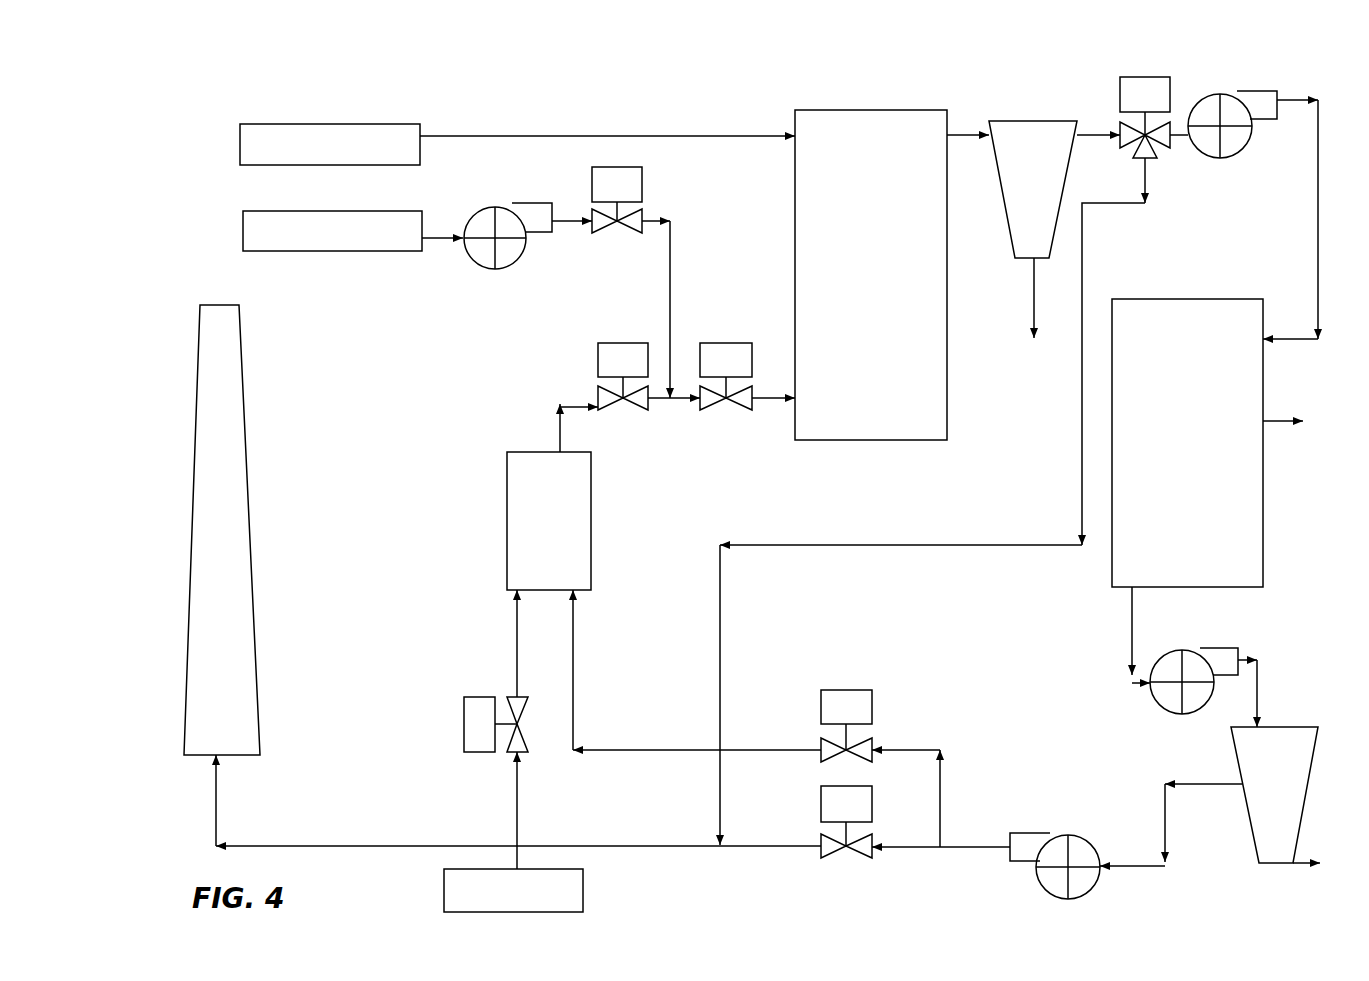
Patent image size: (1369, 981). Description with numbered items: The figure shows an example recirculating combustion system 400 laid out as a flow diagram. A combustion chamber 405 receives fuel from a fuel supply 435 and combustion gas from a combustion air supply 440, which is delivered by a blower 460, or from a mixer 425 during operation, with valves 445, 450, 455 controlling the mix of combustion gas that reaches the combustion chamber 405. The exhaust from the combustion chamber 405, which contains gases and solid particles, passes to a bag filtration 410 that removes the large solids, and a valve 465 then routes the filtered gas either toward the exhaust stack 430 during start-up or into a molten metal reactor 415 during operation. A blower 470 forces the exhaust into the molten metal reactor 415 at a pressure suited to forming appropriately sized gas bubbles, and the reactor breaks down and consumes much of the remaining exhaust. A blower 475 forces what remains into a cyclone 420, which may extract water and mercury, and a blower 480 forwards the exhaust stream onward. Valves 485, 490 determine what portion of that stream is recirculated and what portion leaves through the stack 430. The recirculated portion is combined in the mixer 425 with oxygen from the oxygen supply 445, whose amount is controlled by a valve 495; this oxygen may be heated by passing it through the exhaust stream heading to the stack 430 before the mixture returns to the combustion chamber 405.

The recirculating combustion system 400 is at (250, 95).
The combustion chamber 405 is at (876, 110).
The bag filtration 410 is at (1034, 121).
The molten metal reactor 415 is at (1193, 299).
The cyclone 420 is at (1300, 830).
The mixer 425 is at (591, 516).
The exhaust stack 430 is at (249, 484).
The fuel supply 435 is at (349, 124).
The combustion air supply 440 is at (402, 251).
The oxygen supply 445 is at (642, 182).
The valve 450 is at (624, 343).
The valve 455 is at (727, 343).
The blower 460 is at (496, 207).
The valve 465 is at (1146, 77).
The blower 470 is at (1222, 94).
The blower 475 is at (1174, 650).
The blower 480 is at (1088, 893).
The valve 485 is at (847, 690).
The valve 490 is at (872, 806).
The valve 495 is at (464, 728).